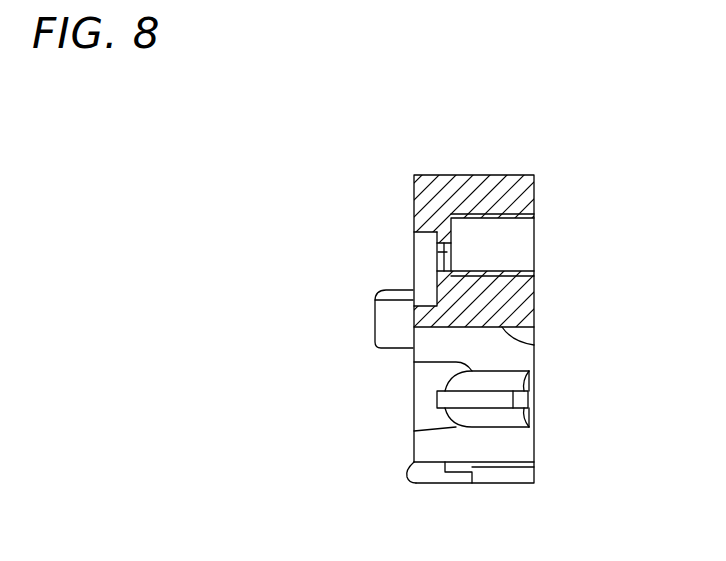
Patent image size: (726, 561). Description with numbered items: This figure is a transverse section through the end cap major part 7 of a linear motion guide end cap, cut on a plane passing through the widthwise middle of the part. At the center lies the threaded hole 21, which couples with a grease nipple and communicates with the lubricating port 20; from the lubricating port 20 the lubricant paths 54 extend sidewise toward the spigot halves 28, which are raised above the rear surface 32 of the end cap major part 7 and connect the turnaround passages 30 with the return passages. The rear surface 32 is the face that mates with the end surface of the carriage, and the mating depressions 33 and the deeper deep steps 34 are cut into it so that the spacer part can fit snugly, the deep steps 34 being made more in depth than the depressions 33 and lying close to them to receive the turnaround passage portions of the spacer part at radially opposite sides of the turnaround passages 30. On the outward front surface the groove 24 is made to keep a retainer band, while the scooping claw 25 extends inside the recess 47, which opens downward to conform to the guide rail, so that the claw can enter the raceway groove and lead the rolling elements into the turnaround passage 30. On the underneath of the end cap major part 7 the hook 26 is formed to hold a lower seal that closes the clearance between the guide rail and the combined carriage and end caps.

The end cap major part 7 is at (552, 190).
The lubricating port 20 is at (430, 254).
The threaded hole 21 is at (493, 216).
The groove 24 is at (528, 397).
The scooping claw 25 is at (503, 418).
The hook 26 is at (420, 475).
The spigot half 28 is at (373, 305).
The turnaround passage 30 is at (426, 410).
The rear surface 32 is at (412, 200).
The mating depression 33 is at (413, 285).
The deep step 34 is at (428, 256).
The recess 47 is at (534, 345).
The lubricant path 54 is at (413, 257).